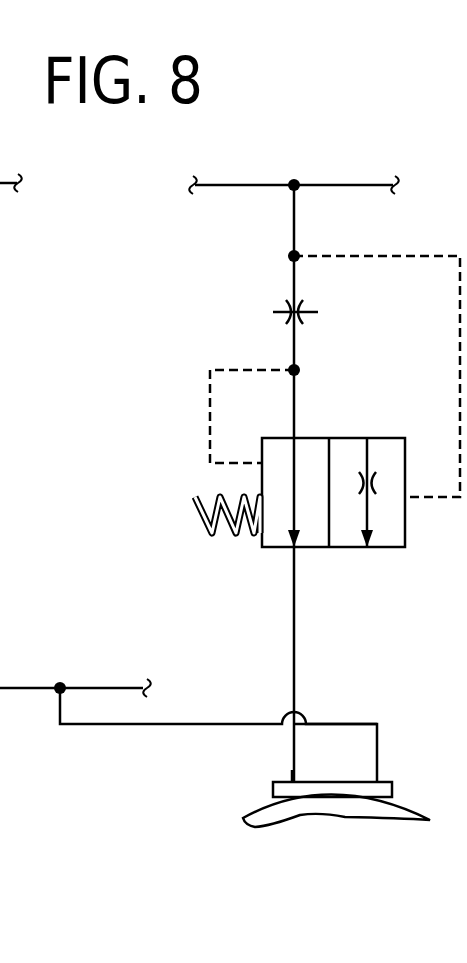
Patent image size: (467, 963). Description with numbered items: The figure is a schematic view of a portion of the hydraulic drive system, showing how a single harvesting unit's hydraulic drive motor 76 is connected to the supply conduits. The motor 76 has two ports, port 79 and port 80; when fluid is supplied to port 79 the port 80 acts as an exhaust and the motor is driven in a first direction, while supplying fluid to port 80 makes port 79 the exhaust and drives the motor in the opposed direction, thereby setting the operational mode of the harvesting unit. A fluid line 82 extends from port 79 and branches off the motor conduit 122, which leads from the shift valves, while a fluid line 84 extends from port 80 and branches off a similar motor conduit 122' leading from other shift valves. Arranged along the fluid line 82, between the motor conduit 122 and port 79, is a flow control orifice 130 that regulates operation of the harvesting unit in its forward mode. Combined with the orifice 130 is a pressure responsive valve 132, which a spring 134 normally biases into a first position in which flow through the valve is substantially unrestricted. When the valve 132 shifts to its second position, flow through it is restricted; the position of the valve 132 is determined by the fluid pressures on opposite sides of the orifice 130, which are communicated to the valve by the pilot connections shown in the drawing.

The motor conduit 122 is at (294, 157).
The flow control orifice 130 is at (272, 308).
The pressure responsive valve 132 is at (284, 553).
The spring 134 is at (197, 514).
The fluid line 82 is at (293, 647).
The motor conduit 122' is at (188, 679).
The fluid line 84 is at (345, 724).
The port 79 is at (292, 780).
The port 80 is at (378, 782).
The hydraulic drive motor 76 is at (345, 808).